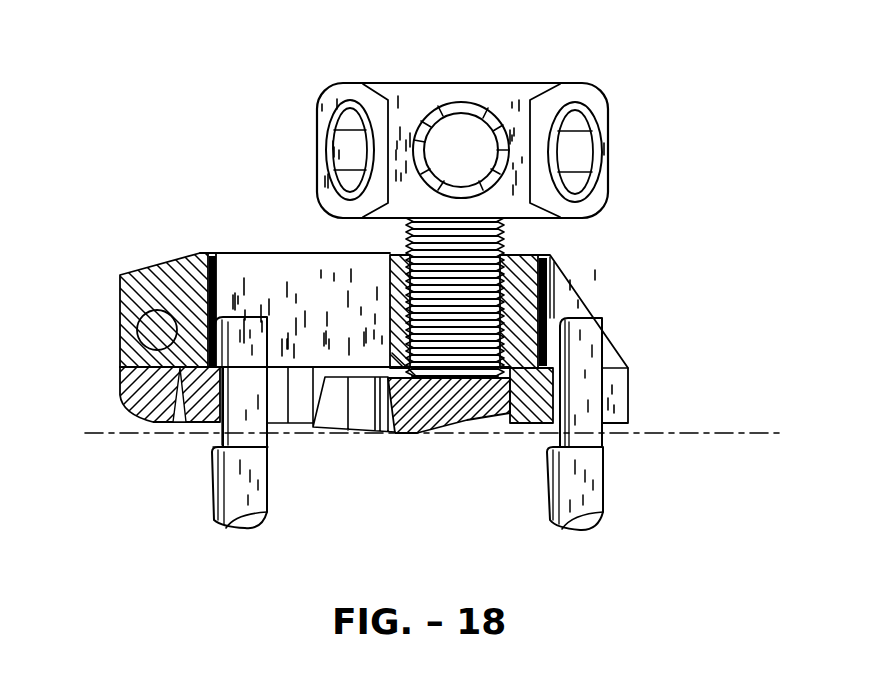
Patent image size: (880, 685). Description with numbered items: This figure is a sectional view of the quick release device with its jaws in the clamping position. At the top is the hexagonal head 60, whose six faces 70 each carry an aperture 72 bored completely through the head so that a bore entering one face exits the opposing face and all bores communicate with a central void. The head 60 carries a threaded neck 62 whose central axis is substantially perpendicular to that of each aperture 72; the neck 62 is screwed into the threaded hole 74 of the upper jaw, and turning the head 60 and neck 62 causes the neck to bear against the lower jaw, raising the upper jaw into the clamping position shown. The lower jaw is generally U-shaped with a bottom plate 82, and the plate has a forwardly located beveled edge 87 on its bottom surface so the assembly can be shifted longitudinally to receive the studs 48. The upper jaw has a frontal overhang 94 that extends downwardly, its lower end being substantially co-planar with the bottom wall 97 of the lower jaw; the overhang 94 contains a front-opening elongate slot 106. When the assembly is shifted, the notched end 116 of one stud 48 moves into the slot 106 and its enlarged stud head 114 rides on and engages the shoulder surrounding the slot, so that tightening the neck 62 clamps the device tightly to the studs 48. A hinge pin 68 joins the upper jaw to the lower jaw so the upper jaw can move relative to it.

The stud 48 is at (282, 502).
The hexagonal head 60 is at (507, 77).
The threaded neck 62 is at (393, 298).
The hinge pin 68 is at (150, 333).
The face 70 is at (572, 98).
The aperture 72 is at (582, 133).
The threaded hole 74 is at (410, 256).
The bottom plate 82 is at (130, 395).
The beveled edge 87 is at (480, 437).
The frontal overhang 94 is at (648, 322).
The bottom wall 97 is at (410, 437).
The elongate slot 106 is at (620, 388).
The stud head 114 is at (247, 325).
The notched end 116 is at (203, 443).